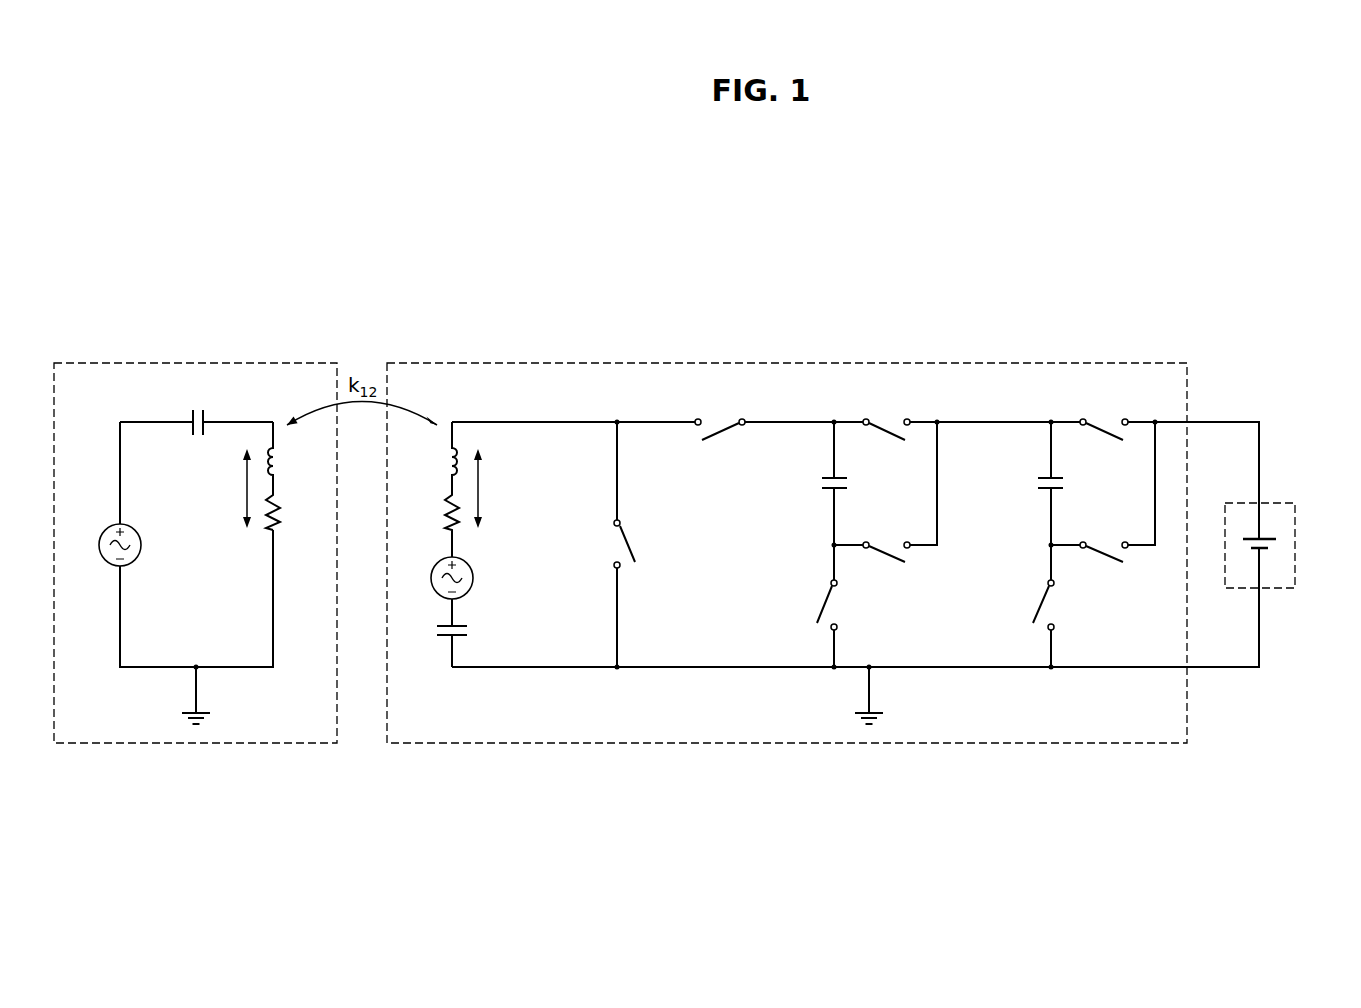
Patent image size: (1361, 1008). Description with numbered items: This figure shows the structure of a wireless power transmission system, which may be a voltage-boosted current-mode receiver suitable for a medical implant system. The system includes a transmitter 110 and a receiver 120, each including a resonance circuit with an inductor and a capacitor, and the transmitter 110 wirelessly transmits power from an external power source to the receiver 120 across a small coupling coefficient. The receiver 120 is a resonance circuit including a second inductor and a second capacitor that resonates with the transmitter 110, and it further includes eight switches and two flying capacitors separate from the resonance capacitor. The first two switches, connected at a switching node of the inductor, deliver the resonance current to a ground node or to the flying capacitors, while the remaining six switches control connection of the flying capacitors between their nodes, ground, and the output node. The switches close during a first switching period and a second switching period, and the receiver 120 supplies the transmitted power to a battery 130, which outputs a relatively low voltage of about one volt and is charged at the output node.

The transmitter 110 is at (195, 363).
The receiver 120 is at (786, 363).
The battery 130 is at (1276, 503).